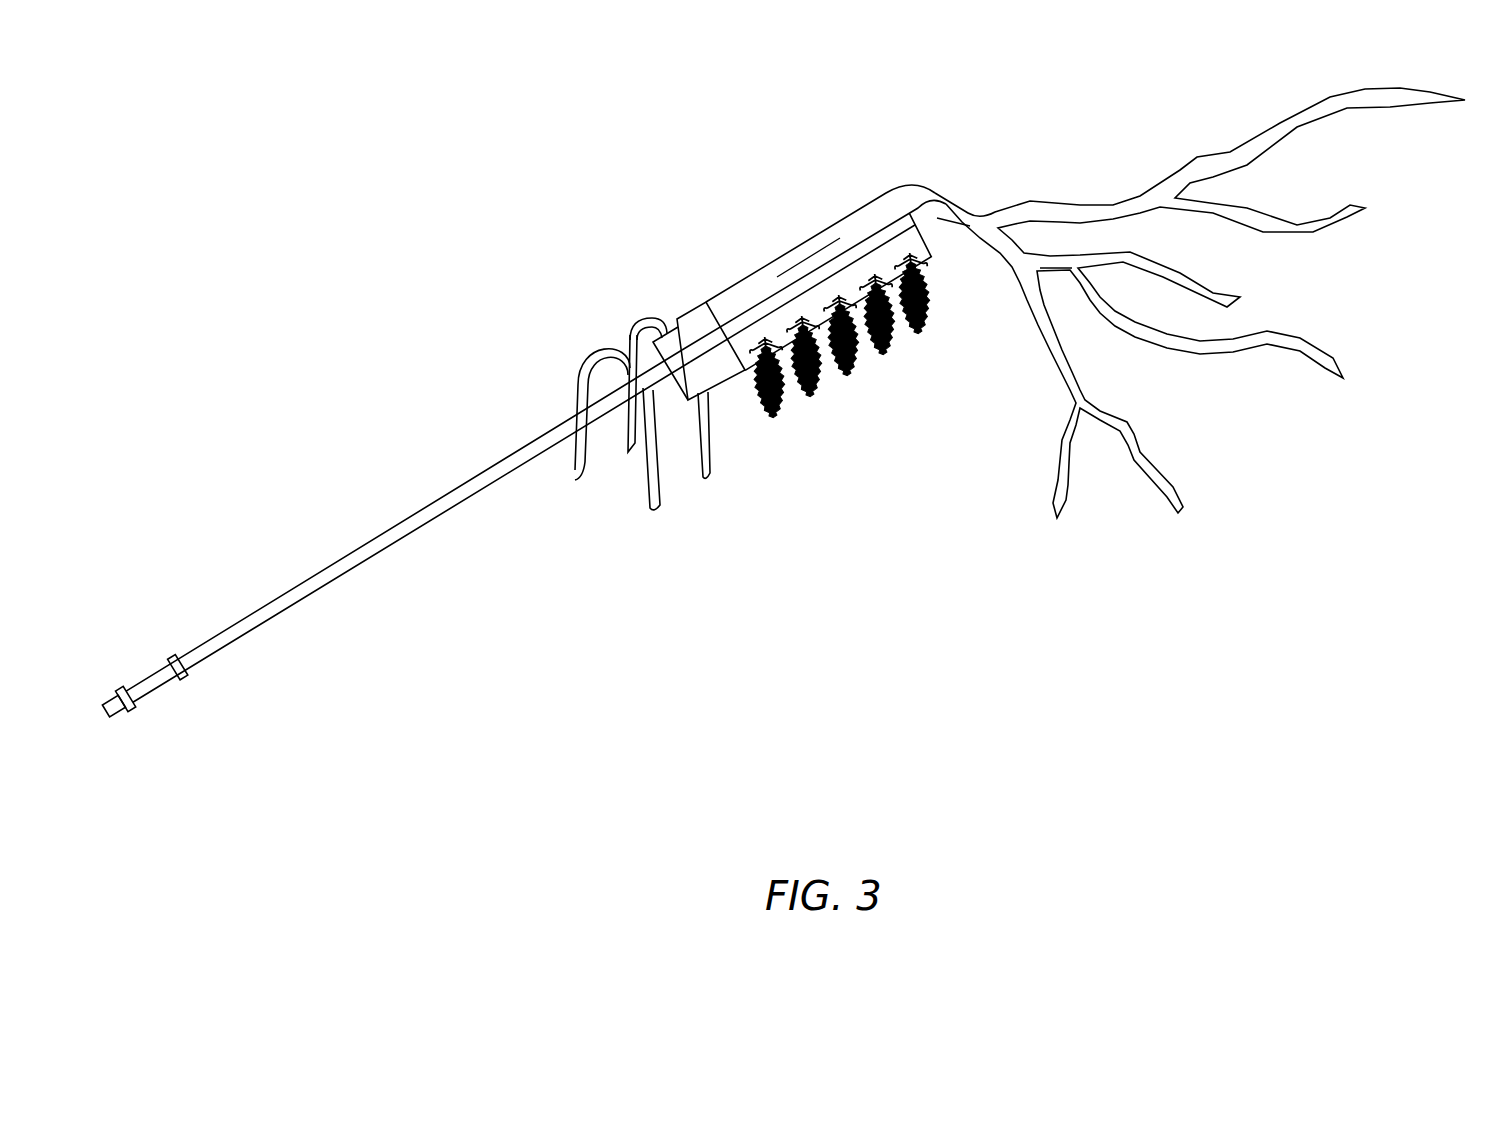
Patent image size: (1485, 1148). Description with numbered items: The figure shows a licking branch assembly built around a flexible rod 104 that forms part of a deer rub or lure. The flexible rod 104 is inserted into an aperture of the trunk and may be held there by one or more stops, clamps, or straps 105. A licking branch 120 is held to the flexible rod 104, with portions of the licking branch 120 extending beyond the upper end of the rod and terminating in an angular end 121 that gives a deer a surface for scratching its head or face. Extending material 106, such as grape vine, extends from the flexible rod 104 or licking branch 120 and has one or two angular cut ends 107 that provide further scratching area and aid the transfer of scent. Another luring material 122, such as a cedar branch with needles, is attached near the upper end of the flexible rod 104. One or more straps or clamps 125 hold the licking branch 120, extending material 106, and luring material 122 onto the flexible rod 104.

The flexible rod 104 is at (118, 711).
The stop, clamp, or strap 105 is at (174, 659).
The extending material 106 is at (705, 430).
The angular cut end 107 is at (575, 470).
The licking branch 120 is at (850, 231).
The angular end 121 is at (1173, 487).
The luring material 122 is at (876, 368).
The strap or clamp 125 is at (700, 322).